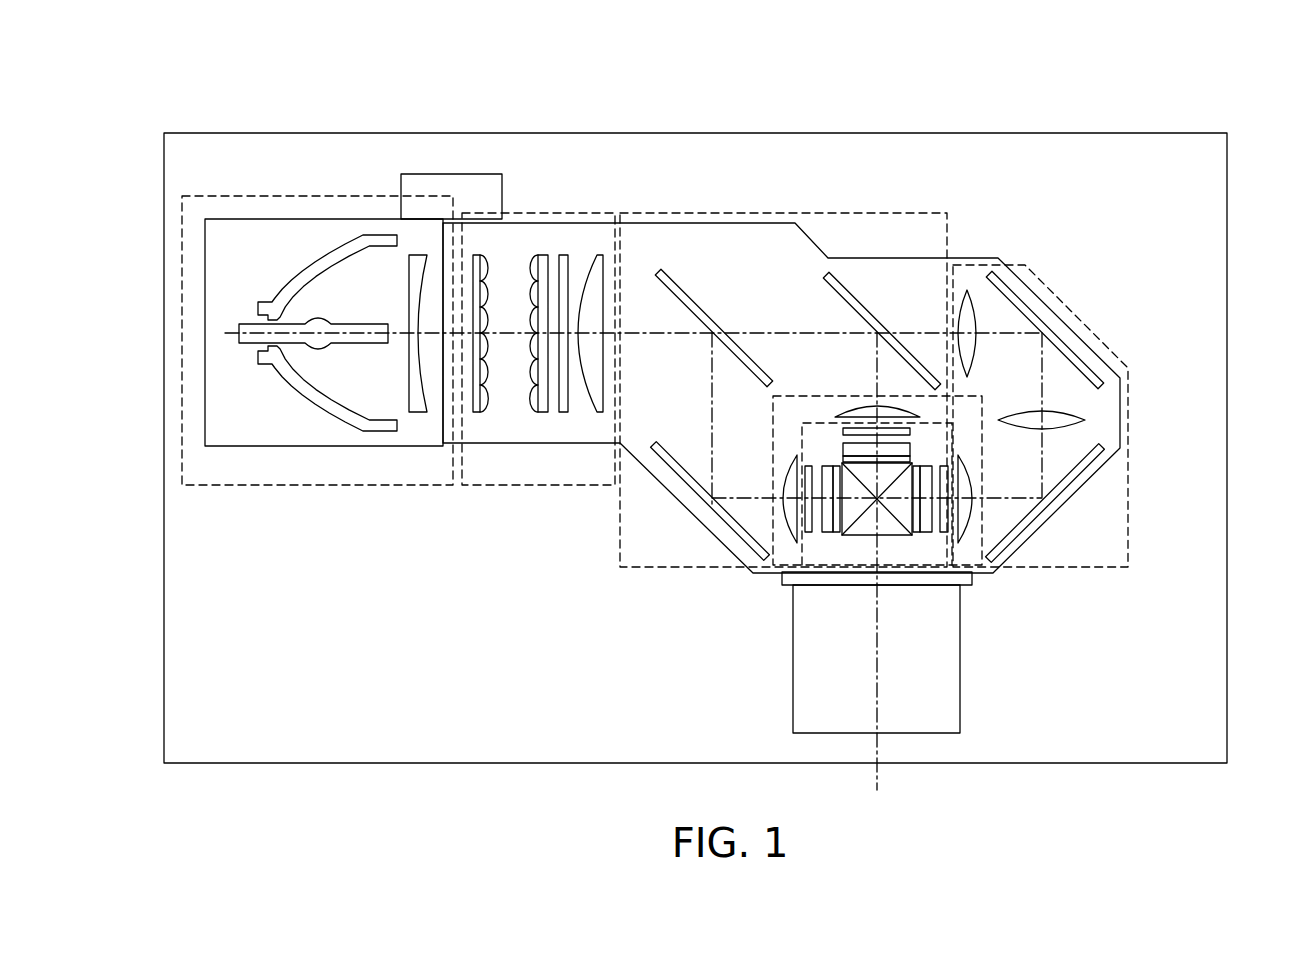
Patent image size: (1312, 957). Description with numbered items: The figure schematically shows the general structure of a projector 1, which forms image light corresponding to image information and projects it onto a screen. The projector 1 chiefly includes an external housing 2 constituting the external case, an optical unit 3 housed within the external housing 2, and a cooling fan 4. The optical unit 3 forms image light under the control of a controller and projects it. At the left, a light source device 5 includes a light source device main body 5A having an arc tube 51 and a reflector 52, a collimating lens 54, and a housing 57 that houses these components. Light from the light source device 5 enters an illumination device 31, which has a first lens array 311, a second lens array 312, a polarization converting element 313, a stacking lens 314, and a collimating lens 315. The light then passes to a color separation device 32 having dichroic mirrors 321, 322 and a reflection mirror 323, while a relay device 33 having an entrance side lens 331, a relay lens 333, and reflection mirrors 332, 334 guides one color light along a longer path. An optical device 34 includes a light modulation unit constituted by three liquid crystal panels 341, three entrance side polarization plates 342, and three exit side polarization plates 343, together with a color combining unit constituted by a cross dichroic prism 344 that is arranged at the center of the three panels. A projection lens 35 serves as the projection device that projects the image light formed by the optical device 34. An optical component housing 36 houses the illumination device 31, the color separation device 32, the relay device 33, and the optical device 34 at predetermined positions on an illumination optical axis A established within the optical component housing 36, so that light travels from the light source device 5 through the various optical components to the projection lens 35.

The projector 1 is at (1058, 110).
The external housing 2 is at (1228, 522).
The optical unit 3 is at (1050, 238).
The cooling fan 4 is at (465, 174).
The light source device 5 is at (196, 487).
The light source device main body 5A is at (318, 415).
The arc tube 51 is at (352, 345).
The reflector 52 is at (300, 388).
The collimating lens 54 is at (418, 413).
The housing 57 is at (298, 219).
The illumination device 31 is at (532, 213).
The lens array 311 is at (478, 413).
The lens array 312 is at (541, 413).
The polarization converting element 313 is at (563, 413).
The stacking lens 314 is at (598, 413).
The color separation device 32 is at (745, 213).
The dichroic mirror 321 is at (682, 298).
The dichroic mirror 322 is at (847, 298).
The reflection mirror 323 is at (680, 468).
The relay device 33 is at (1130, 410).
The entrance side lens 331 is at (968, 307).
The reflection mirror 332 is at (1095, 378).
The relay lens 333 is at (1028, 410).
The reflection mirror 334 is at (1060, 485).
The optical device 34 is at (820, 418).
The liquid crystal panel 341 is at (860, 448).
The entrance side polarization plate 342 is at (843, 431).
The exit side polarization plate 343 is at (843, 459).
The cross dichroic prism 344 is at (886, 520).
The collimating lens 315 is at (786, 487).
The projection lens 35 is at (955, 688).
The optical component housing 36 is at (652, 478).
The illumination optical axis A is at (658, 338).